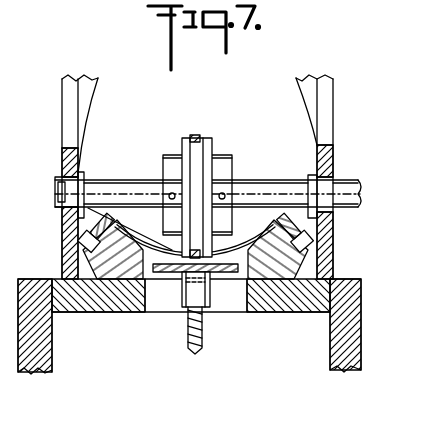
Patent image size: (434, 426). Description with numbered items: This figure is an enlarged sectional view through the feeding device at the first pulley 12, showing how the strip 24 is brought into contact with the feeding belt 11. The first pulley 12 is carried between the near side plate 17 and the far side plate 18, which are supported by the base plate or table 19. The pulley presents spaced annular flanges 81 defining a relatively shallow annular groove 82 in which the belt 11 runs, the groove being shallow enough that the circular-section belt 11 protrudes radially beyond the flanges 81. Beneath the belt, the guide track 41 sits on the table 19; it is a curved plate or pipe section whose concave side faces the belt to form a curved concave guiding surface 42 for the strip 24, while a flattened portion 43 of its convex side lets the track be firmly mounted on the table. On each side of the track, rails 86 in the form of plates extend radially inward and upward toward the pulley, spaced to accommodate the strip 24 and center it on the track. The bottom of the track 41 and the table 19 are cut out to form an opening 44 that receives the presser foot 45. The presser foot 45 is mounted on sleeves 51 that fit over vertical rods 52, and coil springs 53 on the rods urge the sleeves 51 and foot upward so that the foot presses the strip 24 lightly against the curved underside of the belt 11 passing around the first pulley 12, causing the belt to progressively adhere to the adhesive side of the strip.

The feeding belt 11 is at (196, 173).
The first pulley 12 is at (178, 177).
The near side plate 17 is at (62, 155).
The far side plate 18 is at (334, 157).
The base plate or table 19 is at (317, 300).
The strip 24 is at (237, 254).
The guide track 41 is at (294, 259).
The curved concave guiding surface 42 is at (118, 235).
The flattened portion 43 is at (295, 258).
The opening 44 is at (150, 288).
The presser foot 45 is at (121, 245).
The sleeve 51 is at (200, 297).
The vertical rod 52 is at (192, 344).
The coil spring 53 is at (202, 331).
The annular flange 81 is at (182, 146).
The annular groove 82 is at (198, 170).
The rail 86 is at (108, 220).